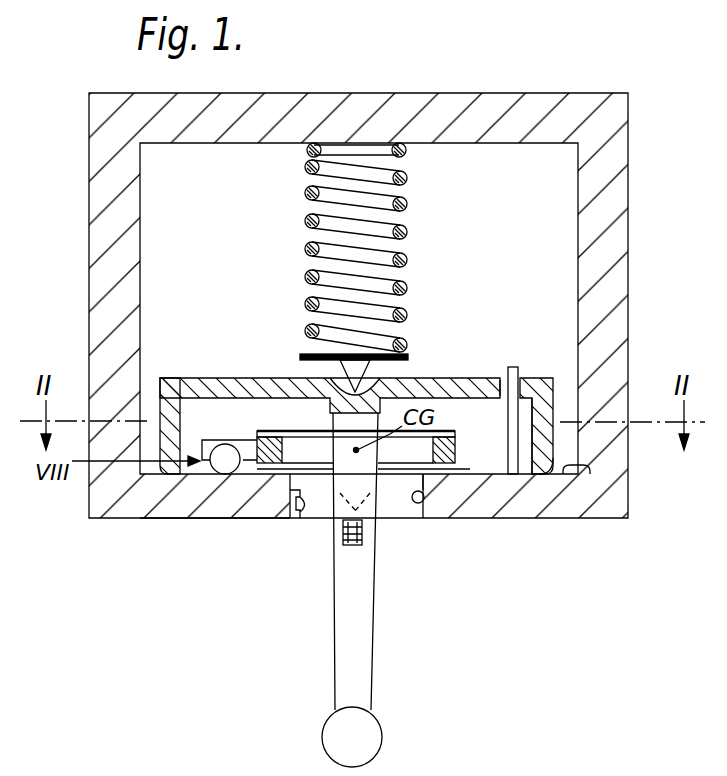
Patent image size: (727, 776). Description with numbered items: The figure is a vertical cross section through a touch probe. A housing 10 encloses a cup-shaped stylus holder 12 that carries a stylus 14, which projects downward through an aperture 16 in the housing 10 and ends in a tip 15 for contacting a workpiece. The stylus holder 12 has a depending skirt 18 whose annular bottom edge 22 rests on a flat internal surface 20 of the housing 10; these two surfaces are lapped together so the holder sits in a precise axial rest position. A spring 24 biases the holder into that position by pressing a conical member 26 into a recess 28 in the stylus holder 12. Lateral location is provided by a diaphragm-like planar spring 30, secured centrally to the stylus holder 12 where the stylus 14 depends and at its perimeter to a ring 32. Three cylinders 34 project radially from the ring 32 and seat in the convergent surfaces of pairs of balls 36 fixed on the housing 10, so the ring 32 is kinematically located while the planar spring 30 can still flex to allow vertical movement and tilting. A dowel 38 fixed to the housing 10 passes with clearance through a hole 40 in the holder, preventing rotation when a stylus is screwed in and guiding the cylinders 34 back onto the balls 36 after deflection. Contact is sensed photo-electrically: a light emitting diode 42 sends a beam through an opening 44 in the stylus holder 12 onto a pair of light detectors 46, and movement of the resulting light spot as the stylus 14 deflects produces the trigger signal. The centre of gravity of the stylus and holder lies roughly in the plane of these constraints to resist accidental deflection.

The housing 10 is at (623, 180).
The stylus holder 12 is at (173, 378).
The stylus 14 is at (340, 638).
The tip 15 is at (383, 727).
The aperture 16 is at (258, 518).
The depending skirt 18 is at (558, 461).
The flat internal surface 20 is at (587, 475).
The annular bottom edge 22 is at (535, 476).
The spring 24 is at (410, 178).
The conical member 26 is at (372, 370).
The recess 28 is at (278, 378).
The planar spring 30 is at (262, 470).
The ring 32 is at (438, 466).
The cylinders 34 is at (207, 440).
The balls 36 is at (226, 475).
The dowel 38 is at (515, 366).
The hole 40 is at (494, 380).
The light emitting diode 42 is at (421, 480).
The opening 44 is at (319, 512).
The light detectors 46 is at (298, 506).